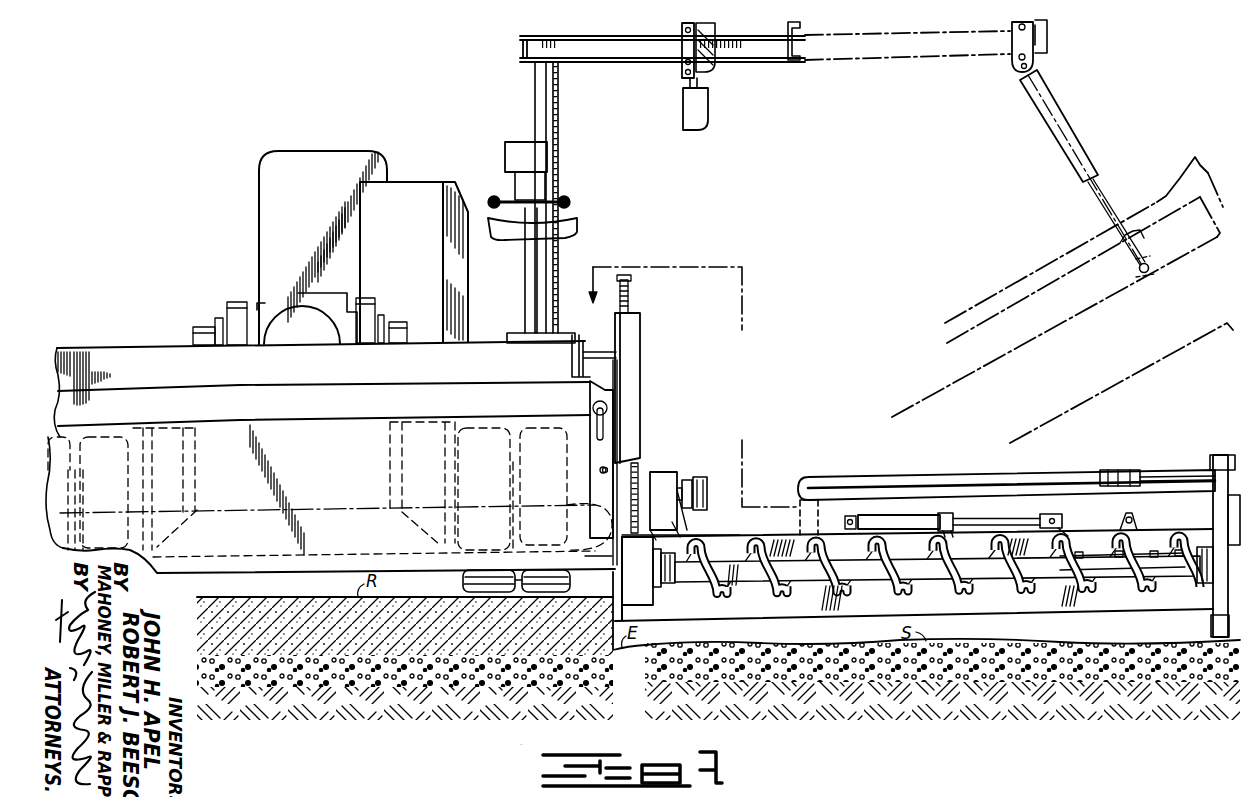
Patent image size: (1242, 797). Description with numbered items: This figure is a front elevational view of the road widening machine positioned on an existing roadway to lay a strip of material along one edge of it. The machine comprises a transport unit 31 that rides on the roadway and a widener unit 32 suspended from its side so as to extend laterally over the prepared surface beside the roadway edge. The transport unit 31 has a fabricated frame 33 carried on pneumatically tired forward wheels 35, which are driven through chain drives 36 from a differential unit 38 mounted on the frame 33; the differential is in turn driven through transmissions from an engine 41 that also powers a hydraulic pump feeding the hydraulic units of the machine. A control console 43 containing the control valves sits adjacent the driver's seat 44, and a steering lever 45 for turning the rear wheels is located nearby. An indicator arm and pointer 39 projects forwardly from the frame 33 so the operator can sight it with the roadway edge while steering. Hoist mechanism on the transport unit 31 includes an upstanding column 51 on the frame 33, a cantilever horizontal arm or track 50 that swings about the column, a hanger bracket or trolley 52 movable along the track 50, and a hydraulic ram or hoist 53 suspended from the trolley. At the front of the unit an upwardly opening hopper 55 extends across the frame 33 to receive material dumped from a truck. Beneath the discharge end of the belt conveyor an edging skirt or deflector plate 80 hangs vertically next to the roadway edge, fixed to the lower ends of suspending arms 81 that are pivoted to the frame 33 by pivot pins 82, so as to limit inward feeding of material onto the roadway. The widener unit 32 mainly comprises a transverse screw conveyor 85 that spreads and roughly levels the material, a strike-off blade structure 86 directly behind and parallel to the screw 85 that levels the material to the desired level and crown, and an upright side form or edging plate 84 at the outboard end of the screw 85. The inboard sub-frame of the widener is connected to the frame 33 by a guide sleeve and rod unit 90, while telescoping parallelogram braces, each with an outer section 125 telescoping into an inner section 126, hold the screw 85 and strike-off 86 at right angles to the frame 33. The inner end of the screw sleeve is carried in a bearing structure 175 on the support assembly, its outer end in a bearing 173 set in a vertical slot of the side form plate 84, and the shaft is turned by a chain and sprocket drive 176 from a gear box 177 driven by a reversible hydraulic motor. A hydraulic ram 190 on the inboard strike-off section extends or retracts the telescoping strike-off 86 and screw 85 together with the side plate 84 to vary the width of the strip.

The transport unit 31 is at (165, 348).
The widener unit 32 is at (1042, 268).
The frame 33 is at (240, 376).
The forward wheels 35 is at (113, 437).
The chain drives 36 is at (218, 320).
The differential unit 38 is at (305, 310).
The indicator arm and pointer 39 is at (600, 437).
The engine 41 is at (330, 160).
The control console 43 is at (418, 188).
The driver's seat 44 is at (568, 232).
The steering lever 45 is at (572, 201).
The cantilever horizontal arm or track 50 is at (757, 48).
The upstanding column 51 is at (562, 104).
The hanger bracket or trolley 52 is at (702, 73).
The hydraulic ram or hoist 53 is at (697, 122).
The hopper 55 is at (207, 563).
The edging skirt or deflector plate 80 is at (608, 562).
The suspending arms 81 is at (604, 458).
The pivot pins 82 is at (608, 468).
The side form or edging plate 84 is at (1200, 580).
The screw conveyor 85 is at (1040, 604).
The strike-off blade structure 86 is at (950, 520).
The guide sleeve and rod unit 90 is at (638, 366).
The outer section 125 is at (1157, 478).
The inner section 126 is at (1008, 482).
The bearing 173 is at (1213, 615).
The bearing structure 175 is at (660, 604).
The chain and sprocket drive 176 is at (668, 476).
The gear box 177 is at (686, 521).
The hydraulic ram 190 is at (907, 518).